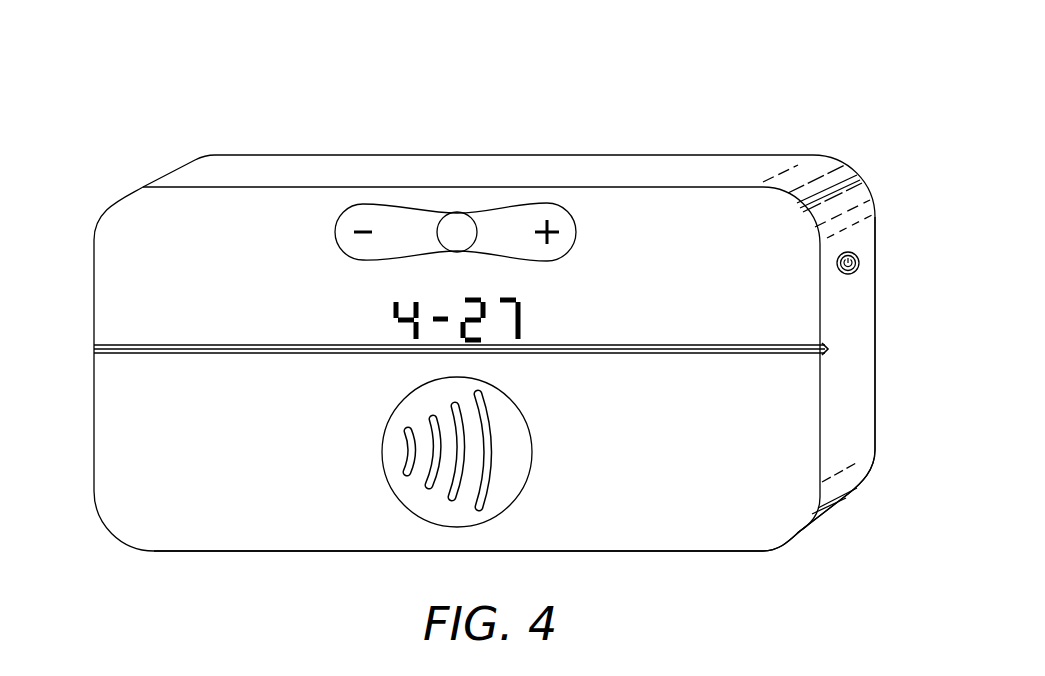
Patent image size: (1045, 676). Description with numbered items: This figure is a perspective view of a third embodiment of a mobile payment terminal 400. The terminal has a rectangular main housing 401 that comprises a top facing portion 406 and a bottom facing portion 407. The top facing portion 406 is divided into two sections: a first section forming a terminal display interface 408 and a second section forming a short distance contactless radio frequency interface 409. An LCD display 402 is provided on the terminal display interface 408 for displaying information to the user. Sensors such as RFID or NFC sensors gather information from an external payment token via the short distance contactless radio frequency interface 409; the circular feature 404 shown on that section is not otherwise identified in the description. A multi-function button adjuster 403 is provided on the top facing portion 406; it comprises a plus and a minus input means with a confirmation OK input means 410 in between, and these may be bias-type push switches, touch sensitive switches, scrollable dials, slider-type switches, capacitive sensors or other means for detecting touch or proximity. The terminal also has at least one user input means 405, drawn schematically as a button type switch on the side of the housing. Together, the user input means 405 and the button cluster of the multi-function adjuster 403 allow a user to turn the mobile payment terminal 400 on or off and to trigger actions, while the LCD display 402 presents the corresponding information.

The mobile payment terminal 400 is at (206, 128).
The main housing 401 is at (118, 537).
The LCD display 402 is at (297, 278).
The multi-function button adjuster 403 is at (335, 230).
The speaker 404 is at (498, 494).
The user input means 405 is at (862, 264).
The top facing portion 406 is at (702, 552).
The bottom facing portion 407 is at (876, 448).
The terminal display interface 408 is at (100, 293).
The short distance contactless radio frequency interface 409 is at (297, 552).
The confirmation OK input means 410 is at (474, 217).